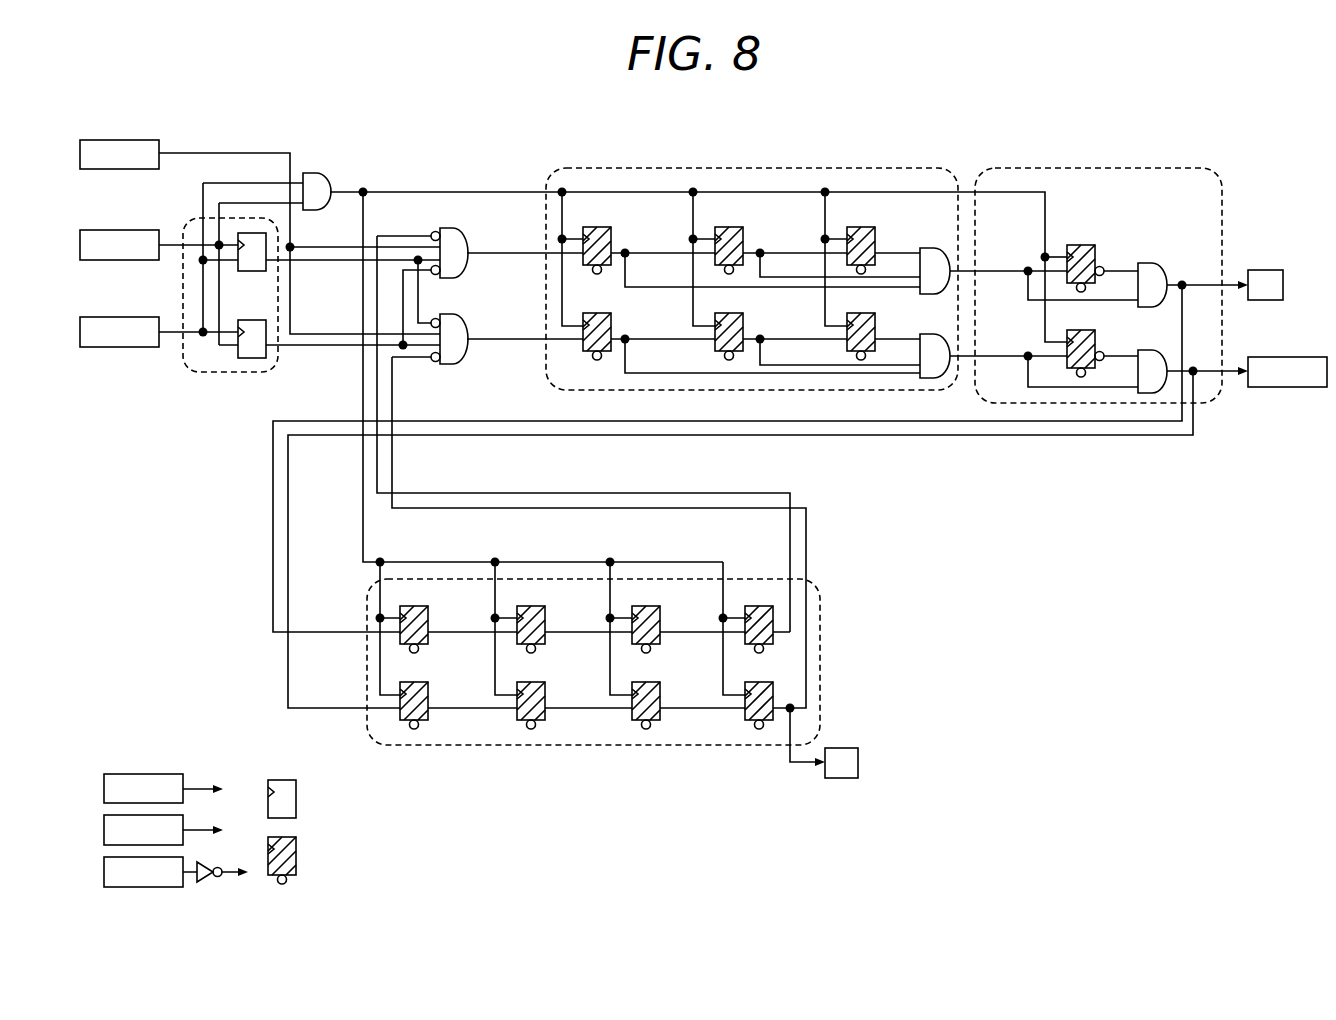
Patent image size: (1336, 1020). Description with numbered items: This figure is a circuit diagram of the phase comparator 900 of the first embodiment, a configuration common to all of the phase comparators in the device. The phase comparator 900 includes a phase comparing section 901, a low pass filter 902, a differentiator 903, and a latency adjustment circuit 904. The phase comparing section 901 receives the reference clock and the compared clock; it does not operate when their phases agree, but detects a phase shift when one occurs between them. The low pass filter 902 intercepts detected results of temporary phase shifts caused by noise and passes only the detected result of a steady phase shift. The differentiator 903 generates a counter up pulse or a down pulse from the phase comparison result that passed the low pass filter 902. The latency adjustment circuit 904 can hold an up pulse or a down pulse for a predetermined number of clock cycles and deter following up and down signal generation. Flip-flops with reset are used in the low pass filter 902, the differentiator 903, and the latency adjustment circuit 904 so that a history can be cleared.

The phase comparator 900 is at (713, 107).
The phase comparing section 901 is at (215, 375).
The low pass filter 902 is at (845, 168).
The differentiator 903 is at (1132, 168).
The latency adjustment circuit 904 is at (820, 600).